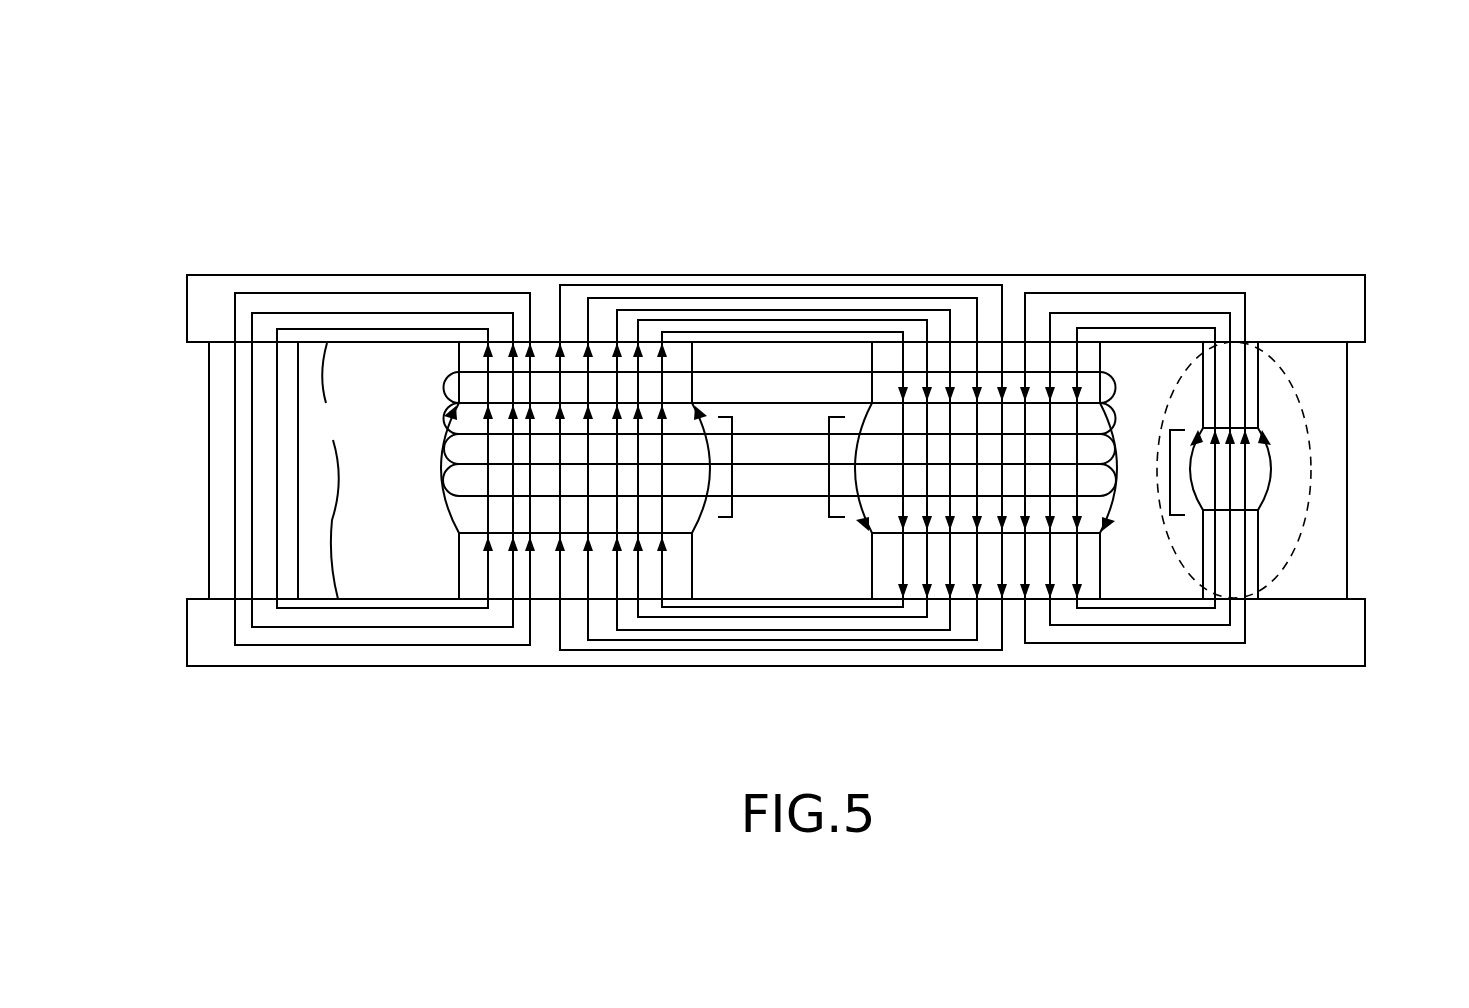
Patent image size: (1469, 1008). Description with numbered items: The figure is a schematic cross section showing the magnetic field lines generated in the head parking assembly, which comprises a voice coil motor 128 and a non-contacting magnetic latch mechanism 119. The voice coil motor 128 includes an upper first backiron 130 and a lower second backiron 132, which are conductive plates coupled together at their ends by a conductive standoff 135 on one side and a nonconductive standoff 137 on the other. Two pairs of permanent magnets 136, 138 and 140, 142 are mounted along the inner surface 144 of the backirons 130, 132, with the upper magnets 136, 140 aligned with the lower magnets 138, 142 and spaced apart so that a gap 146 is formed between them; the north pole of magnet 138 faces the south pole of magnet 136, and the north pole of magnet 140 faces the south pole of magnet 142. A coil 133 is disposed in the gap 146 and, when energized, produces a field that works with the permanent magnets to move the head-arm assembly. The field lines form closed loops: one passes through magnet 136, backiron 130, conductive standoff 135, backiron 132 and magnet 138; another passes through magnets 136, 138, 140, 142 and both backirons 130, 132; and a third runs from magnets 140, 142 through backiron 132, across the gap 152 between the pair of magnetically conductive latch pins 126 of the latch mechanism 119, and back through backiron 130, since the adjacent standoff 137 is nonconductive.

The voice coil motor 128 is at (754, 138).
The first backiron 130 is at (1002, 282).
The second backiron 132 is at (1358, 640).
The conductive standoff 135 is at (209, 578).
The nonconductive standoff 137 is at (1332, 540).
The permanent magnet 136 is at (470, 357).
The permanent magnet 138 is at (470, 592).
The permanent magnet 140 is at (887, 375).
The permanent magnet 142 is at (1012, 590).
The coil 133 is at (410, 453).
The inner surface 144 is at (337, 471).
The gap 146 is at (828, 470).
The non-contacting magnetic latch mechanism 119 is at (1310, 440).
The gap 152 is at (1170, 470).
The non-contacting magnetic latch pins 126 is at (1270, 568).